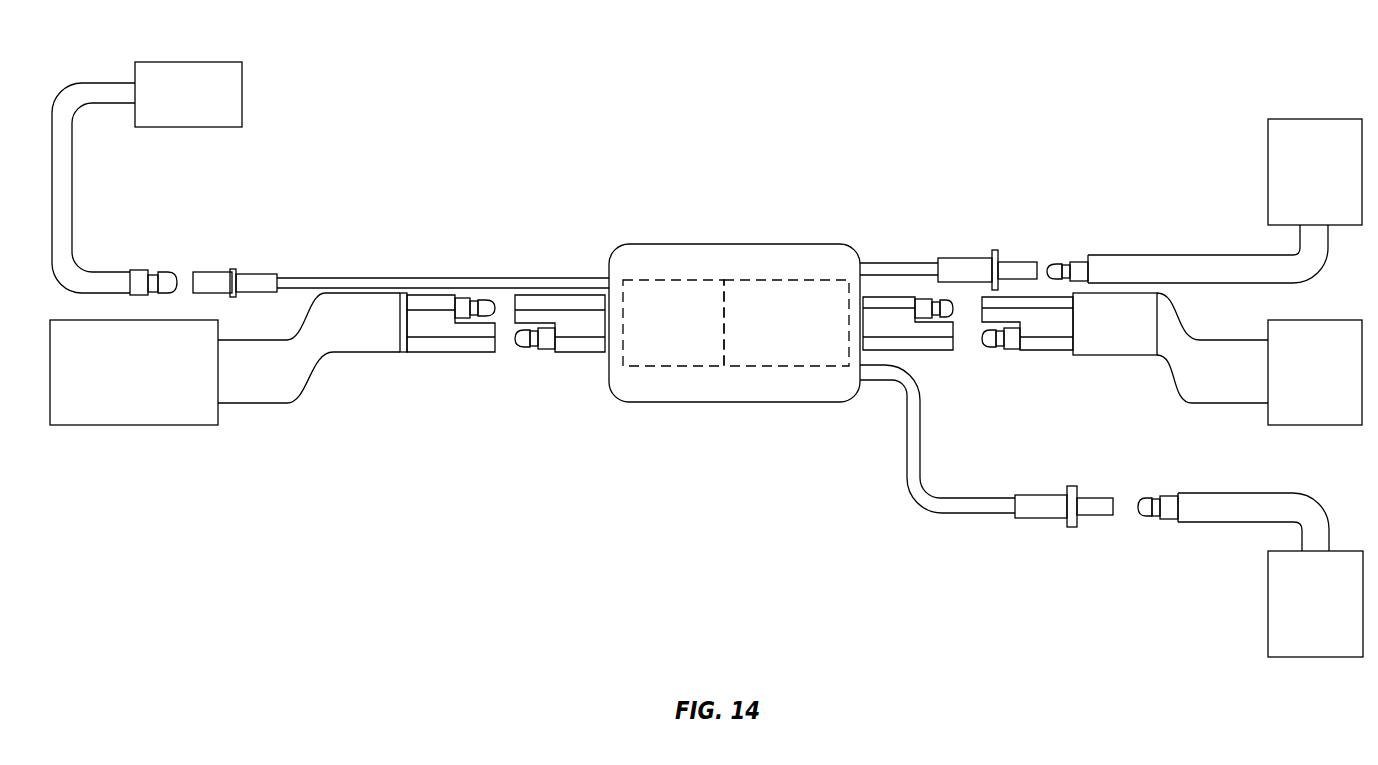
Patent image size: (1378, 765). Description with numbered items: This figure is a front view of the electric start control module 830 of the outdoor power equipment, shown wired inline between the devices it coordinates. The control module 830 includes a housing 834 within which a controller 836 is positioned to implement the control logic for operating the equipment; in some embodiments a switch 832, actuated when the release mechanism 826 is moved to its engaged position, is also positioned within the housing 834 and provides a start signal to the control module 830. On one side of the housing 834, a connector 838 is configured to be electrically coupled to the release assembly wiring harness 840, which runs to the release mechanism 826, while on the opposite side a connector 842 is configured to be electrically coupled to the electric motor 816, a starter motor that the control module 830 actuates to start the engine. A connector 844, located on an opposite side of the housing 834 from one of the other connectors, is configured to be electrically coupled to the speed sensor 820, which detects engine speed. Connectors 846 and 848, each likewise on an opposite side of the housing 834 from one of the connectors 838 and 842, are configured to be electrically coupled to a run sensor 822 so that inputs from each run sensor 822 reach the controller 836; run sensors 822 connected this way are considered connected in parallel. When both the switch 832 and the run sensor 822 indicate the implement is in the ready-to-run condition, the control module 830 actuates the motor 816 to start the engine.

The electric motor 816 is at (1310, 320).
The speed sensor 820 is at (235, 62).
The run sensor 822 is at (1266, 150).
The release mechanism 826 is at (107, 426).
The electric start control module 830 is at (930, 186).
The switch 832 is at (650, 367).
The housing 834 is at (830, 244).
The controller 836 is at (787, 367).
The connector 838 is at (580, 353).
The release assembly wiring harness 840 is at (447, 353).
The connector 842 is at (930, 352).
The connector 844 is at (268, 272).
The connector 846 is at (962, 256).
The connector 848 is at (1032, 520).